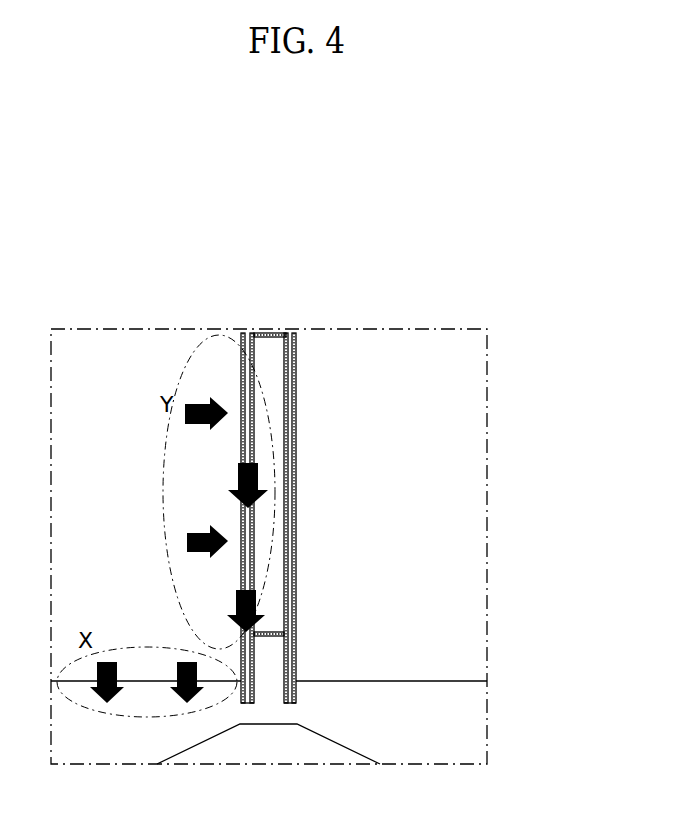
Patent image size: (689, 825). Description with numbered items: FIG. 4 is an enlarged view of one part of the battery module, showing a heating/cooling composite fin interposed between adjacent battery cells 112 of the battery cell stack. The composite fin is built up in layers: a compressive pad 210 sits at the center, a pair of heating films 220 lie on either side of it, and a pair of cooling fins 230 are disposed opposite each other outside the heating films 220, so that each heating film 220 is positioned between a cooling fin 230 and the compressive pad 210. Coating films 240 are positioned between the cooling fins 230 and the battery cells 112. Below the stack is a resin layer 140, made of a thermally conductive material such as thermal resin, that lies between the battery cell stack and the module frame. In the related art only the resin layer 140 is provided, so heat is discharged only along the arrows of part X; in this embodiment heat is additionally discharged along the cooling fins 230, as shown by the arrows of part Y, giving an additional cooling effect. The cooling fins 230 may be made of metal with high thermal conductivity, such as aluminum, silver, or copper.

The battery cell 112 is at (457, 497).
The resin layer 140 is at (460, 727).
The compressive pad 210 is at (280, 333).
The heating film 220 is at (253, 333).
The cooling fin 230 is at (243, 333).
The coating film 240 is at (297, 355).